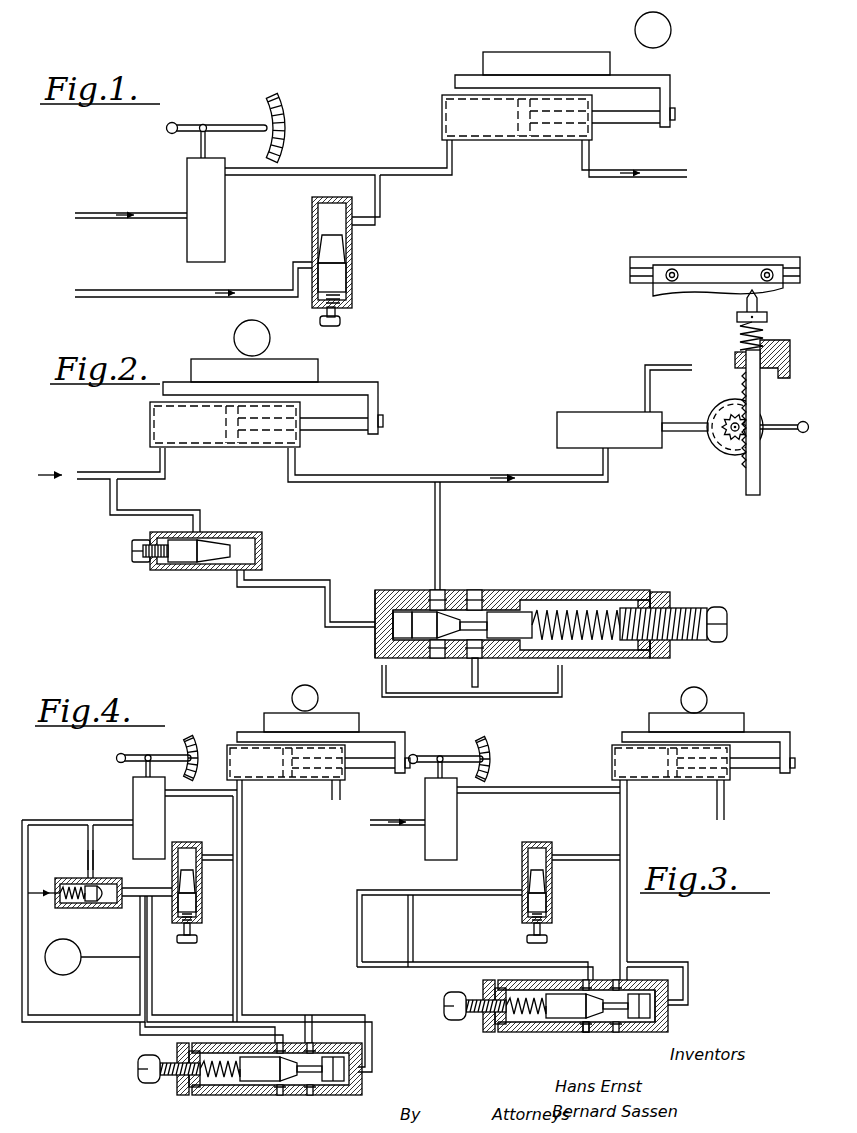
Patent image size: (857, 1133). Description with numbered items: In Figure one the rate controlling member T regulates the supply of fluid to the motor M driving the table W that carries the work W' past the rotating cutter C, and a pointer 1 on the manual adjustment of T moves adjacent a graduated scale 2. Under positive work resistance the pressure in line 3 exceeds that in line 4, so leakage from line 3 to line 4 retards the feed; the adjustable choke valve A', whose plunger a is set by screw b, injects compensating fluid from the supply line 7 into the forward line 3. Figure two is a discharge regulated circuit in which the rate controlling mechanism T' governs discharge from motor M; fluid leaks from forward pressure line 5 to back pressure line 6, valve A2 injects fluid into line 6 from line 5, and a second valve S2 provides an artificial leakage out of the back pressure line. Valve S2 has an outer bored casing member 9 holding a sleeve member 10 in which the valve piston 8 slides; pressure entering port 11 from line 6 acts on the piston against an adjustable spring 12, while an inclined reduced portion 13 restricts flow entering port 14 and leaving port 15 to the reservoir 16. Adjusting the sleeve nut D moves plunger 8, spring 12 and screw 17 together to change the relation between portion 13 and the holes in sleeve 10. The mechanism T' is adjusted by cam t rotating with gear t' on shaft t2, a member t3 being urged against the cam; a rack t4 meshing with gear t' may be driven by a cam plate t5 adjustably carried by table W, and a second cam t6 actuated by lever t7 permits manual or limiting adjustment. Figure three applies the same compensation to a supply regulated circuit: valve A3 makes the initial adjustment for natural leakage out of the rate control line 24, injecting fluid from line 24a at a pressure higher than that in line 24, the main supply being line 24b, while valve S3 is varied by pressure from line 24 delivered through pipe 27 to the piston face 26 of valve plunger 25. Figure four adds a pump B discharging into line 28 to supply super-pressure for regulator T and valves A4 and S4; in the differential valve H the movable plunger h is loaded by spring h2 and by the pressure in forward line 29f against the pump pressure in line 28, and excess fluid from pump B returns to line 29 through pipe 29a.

In FIG. 1, the pointer 1 is at (221, 127).
In FIG. 1, the graduated scale 2 is at (279, 110).
In FIG. 1, the forward line 3 is at (326, 168).
In FIG. 1, the line 4 is at (660, 180).
In FIG. 2, the forward pressure line 5 is at (91, 472).
In FIG. 2, the back pressure line 6 is at (417, 475).
In FIG. 1, the supply line 7 is at (136, 298).
In FIG. 2, the valve plunger 8 is at (546, 610).
In FIG. 2, the outer bored casing member 9 is at (506, 590).
In FIG. 2, the sleeve member 10 is at (380, 612).
In FIG. 2, the port 11 is at (375, 640).
In FIG. 2, the adjustable spring 12 is at (590, 596).
In FIG. 2, the inclined reduced portion 13 is at (450, 650).
In FIG. 2, the port 14 is at (455, 592).
In FIG. 2, the port 15 is at (475, 682).
In FIG. 2, the reservoir 16 is at (566, 681).
In FIG. 2, the screw 17 is at (725, 613).
In FIG. 3, the screw 17 is at (452, 1022).
In FIG. 4, the screw 17 is at (143, 1082).
In FIG. 3, the rate control line 24 is at (520, 788).
In FIG. 3, the line 24a is at (405, 893).
In FIG. 3, the main supply line 24b is at (384, 826).
In FIG. 3, the valve plunger 25 is at (598, 1024).
In FIG. 3, the valve piston face 26 is at (674, 1012).
In FIG. 3, the pipe 27 is at (692, 977).
In FIG. 4, the line 28 is at (147, 972).
In FIG. 4, the line 29 is at (70, 820).
In FIG. 4, the pipe 29a is at (93, 852).
In FIG. 4, the forward line 29f is at (246, 924).
In FIG. 1, the rate controlling member T is at (222, 210).
In FIG. 3, the rate controlling member T is at (450, 798).
In FIG. 4, the rate controlling member T is at (158, 797).
In FIG. 2, the rate controlling mechanism T' is at (624, 406).
In FIG. 1, the valve plunger a is at (322, 248).
In FIG. 1, the adjustable choke valve A' is at (339, 263).
In FIG. 2, the adjustable choke valve A2 is at (222, 548).
In FIG. 3, the valve A3 is at (553, 900).
In FIG. 4, the valve A4 is at (203, 900).
In FIG. 1, the screw b is at (340, 323).
In FIG. 4, the pump B is at (75, 969).
In FIG. 1, the cutter C is at (634, 31).
In FIG. 2, the cutter C is at (234, 338).
In FIG. 3, the cutter C is at (682, 696).
In FIG. 4, the cutter C is at (292, 694).
In FIG. 2, the sleeve nut D is at (668, 600).
In FIG. 3, the sleeve nut D is at (494, 1032).
In FIG. 4, the sleeve nut D is at (182, 1096).
In FIG. 4, the differential valve H is at (100, 900).
In FIG. 4, the movable plunger h is at (90, 902).
In FIG. 4, the spring h2 is at (63, 904).
In FIG. 1, the motor M is at (538, 142).
In FIG. 2, the motor M is at (241, 450).
In FIG. 3, the motor M is at (680, 785).
In FIG. 4, the motor M is at (290, 783).
In FIG. 2, the second valve S2 is at (498, 605).
In FIG. 3, the valve S3 is at (573, 1025).
In FIG. 4, the valve S4 is at (237, 1086).
In FIG. 1, the table W is at (572, 92).
In FIG. 2, the table W is at (481, 333).
In FIG. 3, the table W is at (708, 742).
In FIG. 4, the table W is at (333, 743).
In FIG. 1, the work W' is at (529, 52).
In FIG. 2, the work W' is at (265, 360).
In FIG. 3, the work W' is at (678, 717).
In FIG. 4, the work W' is at (296, 709).
In FIG. 2, the cam t is at (739, 422).
In FIG. 2, the gear t' is at (710, 455).
In FIG. 2, the shaft t2 is at (735, 441).
In FIG. 2, the member t3 is at (681, 435).
In FIG. 2, the rack t4 is at (760, 310).
In FIG. 2, the cam plate t5 is at (712, 298).
In FIG. 2, the second cam t6 is at (760, 446).
In FIG. 2, the lever t7 is at (798, 421).